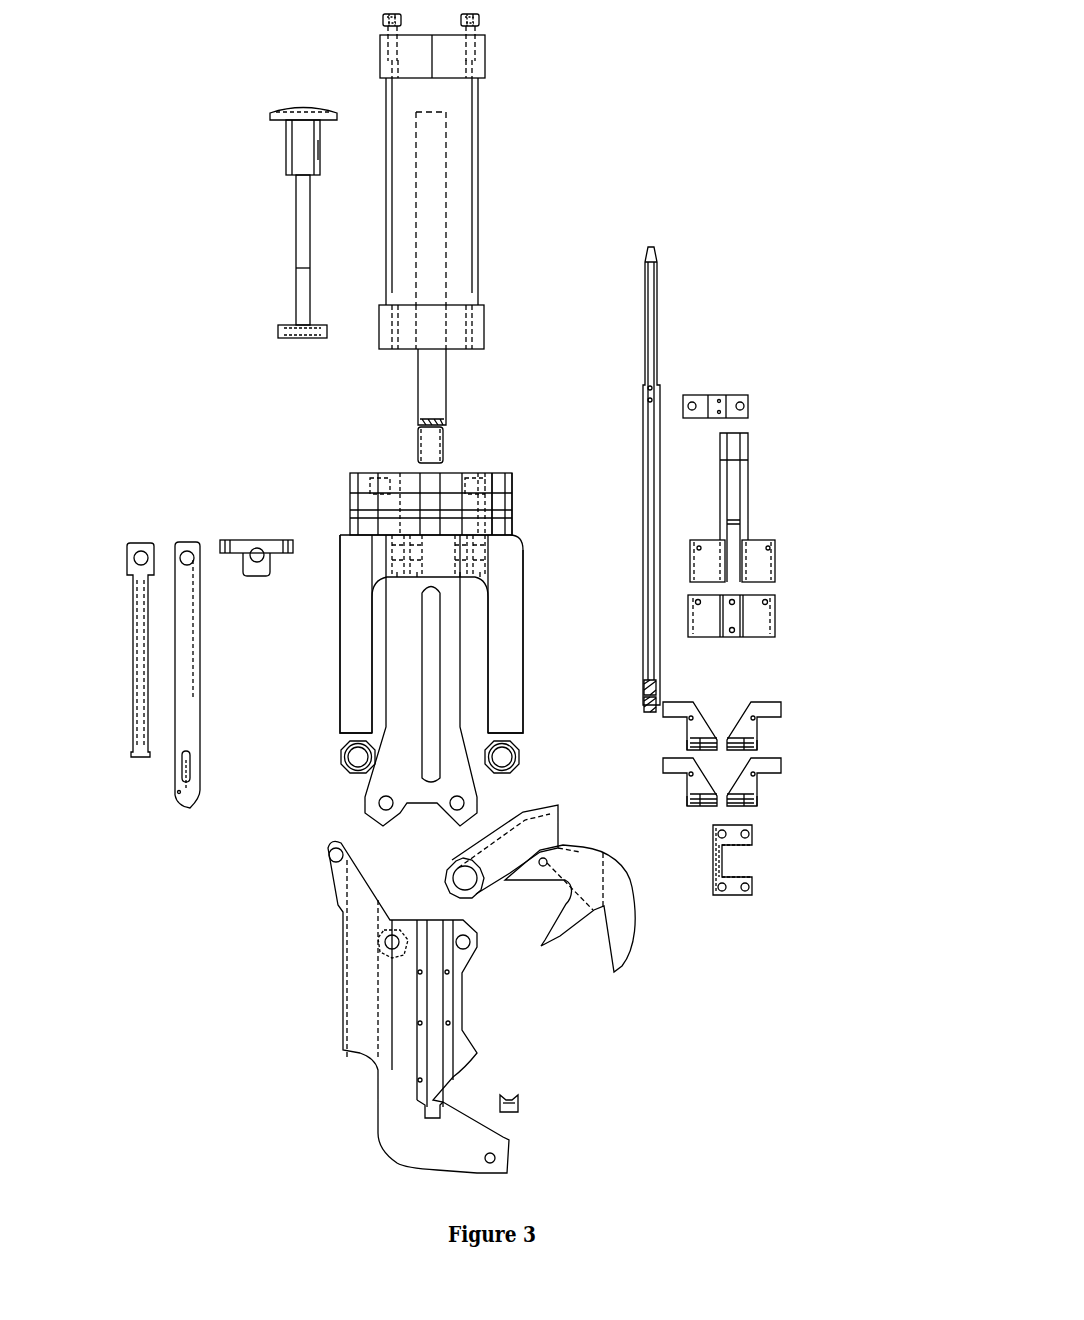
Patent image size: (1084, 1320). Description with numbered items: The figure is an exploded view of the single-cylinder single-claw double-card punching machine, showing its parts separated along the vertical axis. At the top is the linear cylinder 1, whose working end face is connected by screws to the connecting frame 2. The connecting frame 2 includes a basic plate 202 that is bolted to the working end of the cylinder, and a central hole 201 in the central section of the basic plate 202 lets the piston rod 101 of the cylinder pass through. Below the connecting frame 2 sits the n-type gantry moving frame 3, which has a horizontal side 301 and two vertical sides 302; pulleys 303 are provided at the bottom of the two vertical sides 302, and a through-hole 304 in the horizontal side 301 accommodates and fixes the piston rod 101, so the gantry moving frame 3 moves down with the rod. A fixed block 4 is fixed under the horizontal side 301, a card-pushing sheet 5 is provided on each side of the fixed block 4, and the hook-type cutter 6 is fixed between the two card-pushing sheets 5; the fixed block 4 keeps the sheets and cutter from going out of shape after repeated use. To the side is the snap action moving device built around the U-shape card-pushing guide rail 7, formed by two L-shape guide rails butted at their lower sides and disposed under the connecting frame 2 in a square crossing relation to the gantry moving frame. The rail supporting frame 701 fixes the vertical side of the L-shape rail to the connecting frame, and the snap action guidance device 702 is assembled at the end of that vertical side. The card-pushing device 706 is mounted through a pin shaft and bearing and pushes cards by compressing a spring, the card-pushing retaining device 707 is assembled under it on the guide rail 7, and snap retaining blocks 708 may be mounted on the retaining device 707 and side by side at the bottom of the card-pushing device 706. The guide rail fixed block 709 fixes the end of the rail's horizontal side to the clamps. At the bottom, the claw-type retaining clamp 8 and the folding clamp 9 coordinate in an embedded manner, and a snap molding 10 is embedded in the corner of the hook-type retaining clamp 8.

The linear cylinder 1 is at (430, 157).
The piston rod 101 is at (440, 395).
The central hole 201 is at (432, 487).
The basic plate 202 is at (381, 483).
The connecting frame 2 is at (398, 688).
The n-type gantry moving frame 3 is at (540, 583).
The horizontal side 301 is at (485, 553).
The vertical sides 302 is at (358, 595).
The pulleys 303 is at (343, 750).
The through-hole 304 is at (423, 550).
The fixed block 4 is at (258, 553).
The card-pushing sheet 5 is at (138, 738).
The hook-type cutter 6 is at (190, 650).
The U-shape card-pushing guide rail 7 is at (655, 350).
The rail supporting frame 701 is at (708, 405).
The snap action guidance device 702 is at (303, 215).
The card-pushing device 706 is at (735, 490).
The card-pushing retaining device 707 is at (748, 620).
The snap retaining block 708 is at (748, 725).
The guide rail fixed block 709 is at (748, 883).
The retaining clamp 8 is at (387, 1118).
The folding clamp 9 is at (550, 862).
The snap molding 10 is at (514, 1110).